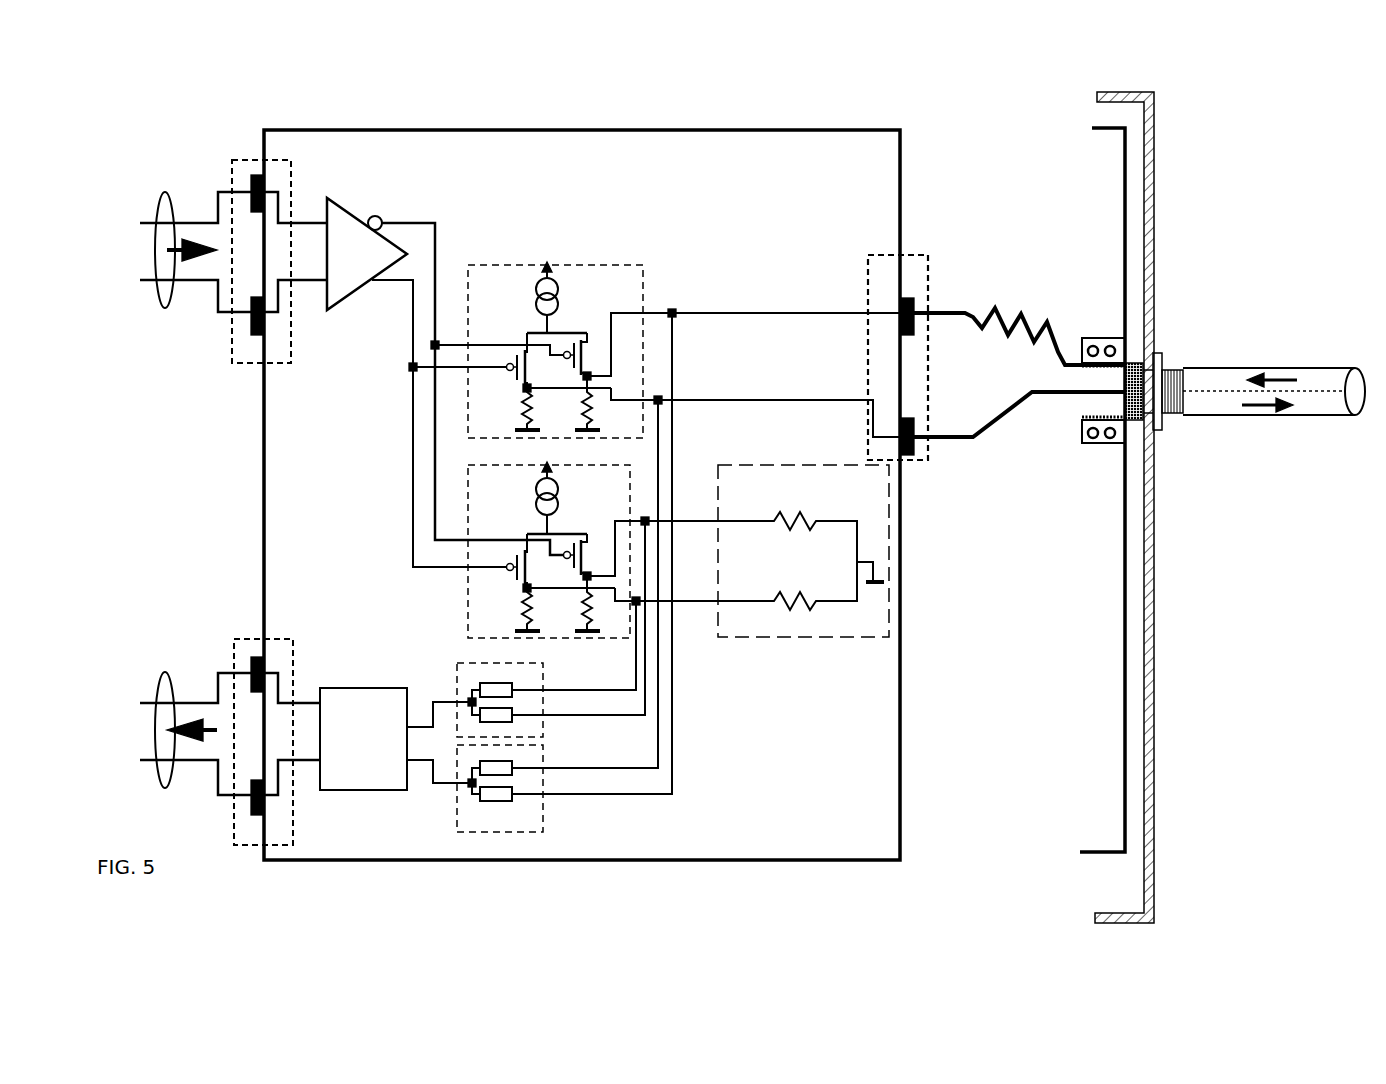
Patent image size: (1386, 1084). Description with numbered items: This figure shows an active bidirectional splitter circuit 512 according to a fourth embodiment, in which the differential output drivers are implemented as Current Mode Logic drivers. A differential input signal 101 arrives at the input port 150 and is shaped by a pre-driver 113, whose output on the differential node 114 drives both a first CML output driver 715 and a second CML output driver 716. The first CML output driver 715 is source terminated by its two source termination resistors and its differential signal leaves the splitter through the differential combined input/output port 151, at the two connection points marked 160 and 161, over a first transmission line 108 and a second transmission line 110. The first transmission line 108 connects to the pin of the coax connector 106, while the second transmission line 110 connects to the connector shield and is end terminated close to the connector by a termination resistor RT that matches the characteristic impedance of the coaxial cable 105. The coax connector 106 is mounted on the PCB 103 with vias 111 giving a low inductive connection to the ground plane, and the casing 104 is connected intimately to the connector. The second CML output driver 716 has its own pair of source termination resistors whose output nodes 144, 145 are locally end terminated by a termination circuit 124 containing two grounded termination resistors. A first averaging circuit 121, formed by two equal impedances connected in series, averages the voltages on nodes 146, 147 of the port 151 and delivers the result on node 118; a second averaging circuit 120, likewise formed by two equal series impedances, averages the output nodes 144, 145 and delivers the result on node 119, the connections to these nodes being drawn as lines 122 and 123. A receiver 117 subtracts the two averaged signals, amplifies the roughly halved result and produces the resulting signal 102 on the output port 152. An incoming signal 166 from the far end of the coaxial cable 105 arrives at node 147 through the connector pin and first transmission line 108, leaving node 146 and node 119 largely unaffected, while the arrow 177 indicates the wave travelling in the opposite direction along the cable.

The differential input signal 101 is at (172, 201).
The resulting signal 102 is at (172, 695).
The PCB 103 is at (1124, 203).
The casing 104 is at (1156, 203).
The coaxial cable 105 is at (1216, 366).
The coax connector 106 is at (1148, 425).
The first transmission line 108 is at (970, 436).
The second transmission line 110 is at (940, 320).
The vias 111 is at (1112, 346).
The pre-driver 113 is at (362, 212).
The differential node 114 is at (432, 339).
The receiver 117 is at (348, 790).
The node 118 is at (438, 787).
The node 119 is at (446, 702).
The second averaging circuit 120 is at (514, 663).
The first averaging circuit 121 is at (543, 748).
The impedance block 120 output lines 122 is at (568, 700).
The impedance block 121 output lines 123 is at (592, 790).
The termination circuit 124 is at (788, 640).
The output node 144 is at (700, 521).
The output node 145 is at (700, 601).
The node 146 is at (718, 313).
The node 147 is at (723, 400).
The input port 150 is at (232, 348).
The differential combined input/output port 151 is at (928, 277).
The output port 152 is at (294, 650).
The upper connector pin 160 is at (916, 301).
The lower connector pin 161 is at (908, 456).
The incoming signal 166 is at (1284, 375).
The outgoing signal direction 177 is at (1268, 402).
The integrated circuit housing 512 is at (900, 752).
The first CML output driver 715 is at (578, 265).
The second CML output driver 716 is at (468, 615).